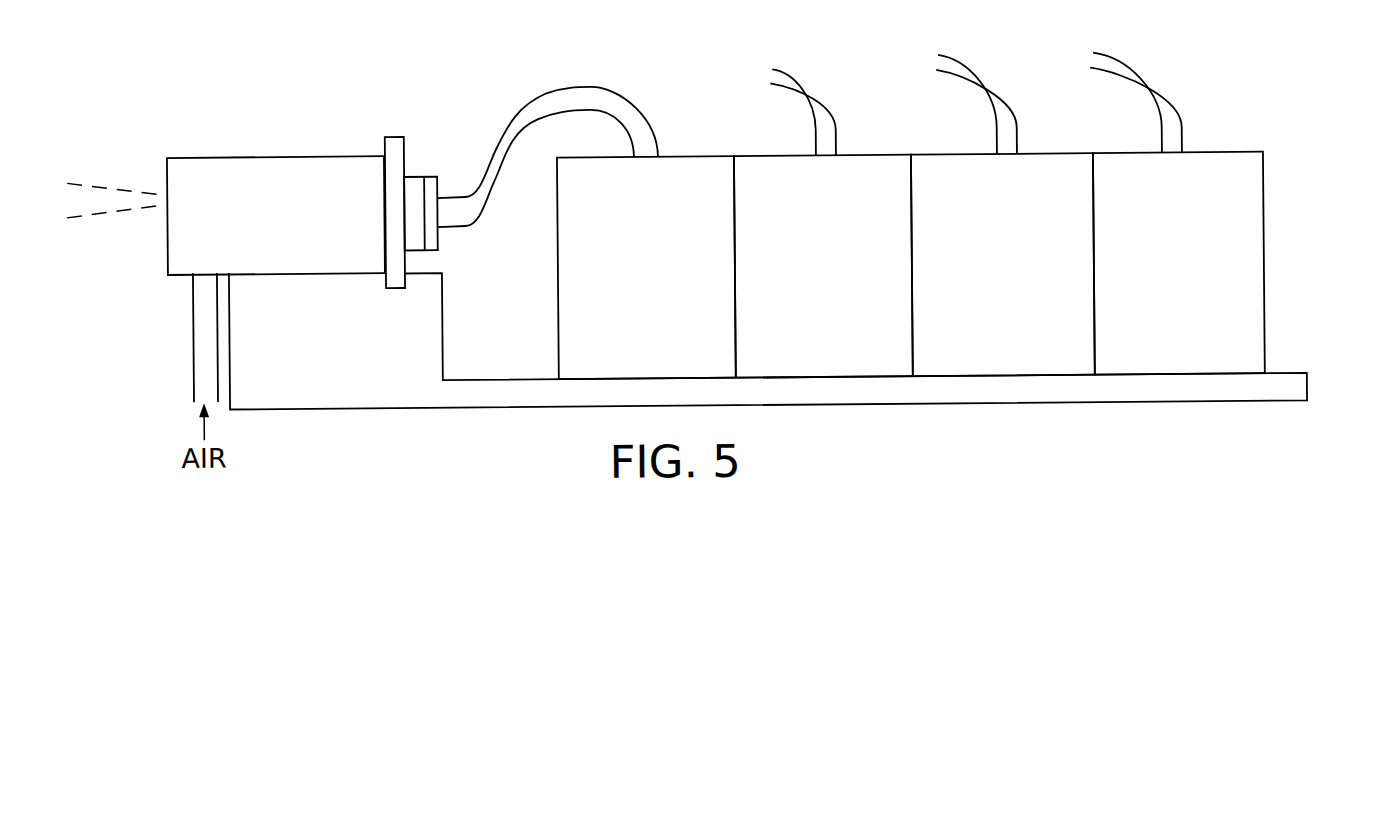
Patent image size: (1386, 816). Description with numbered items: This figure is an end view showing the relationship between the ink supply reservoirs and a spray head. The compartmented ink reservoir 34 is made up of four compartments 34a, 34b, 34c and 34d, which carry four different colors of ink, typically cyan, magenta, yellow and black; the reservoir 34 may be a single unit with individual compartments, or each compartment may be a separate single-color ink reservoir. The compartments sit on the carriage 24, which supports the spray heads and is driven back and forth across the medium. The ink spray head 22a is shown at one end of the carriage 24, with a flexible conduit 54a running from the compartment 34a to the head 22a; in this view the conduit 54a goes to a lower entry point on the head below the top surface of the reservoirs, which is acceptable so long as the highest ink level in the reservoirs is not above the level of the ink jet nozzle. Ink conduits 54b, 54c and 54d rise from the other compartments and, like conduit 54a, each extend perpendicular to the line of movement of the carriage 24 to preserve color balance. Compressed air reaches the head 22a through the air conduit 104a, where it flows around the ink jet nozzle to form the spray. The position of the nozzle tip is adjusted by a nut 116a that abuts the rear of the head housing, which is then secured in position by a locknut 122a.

The ink spray head 22a is at (219, 154).
The nut 116a is at (393, 134).
The locknut 122a is at (422, 174).
The flexible conduit 54a is at (541, 93).
The compartmented ink reservoir 34 is at (957, 219).
The ink reservoir compartment 34a is at (724, 132).
The ink reservoir compartment 34b is at (924, 130).
The ink reservoir compartment 34c is at (1094, 132).
The ink reservoir compartment 34d is at (1239, 215).
The ink conduit 54b is at (809, 88).
The ink conduit 54c is at (980, 85).
The ink conduit 54d is at (1154, 84).
The carriage 24 is at (1297, 381).
The air conduit 104a is at (192, 352).